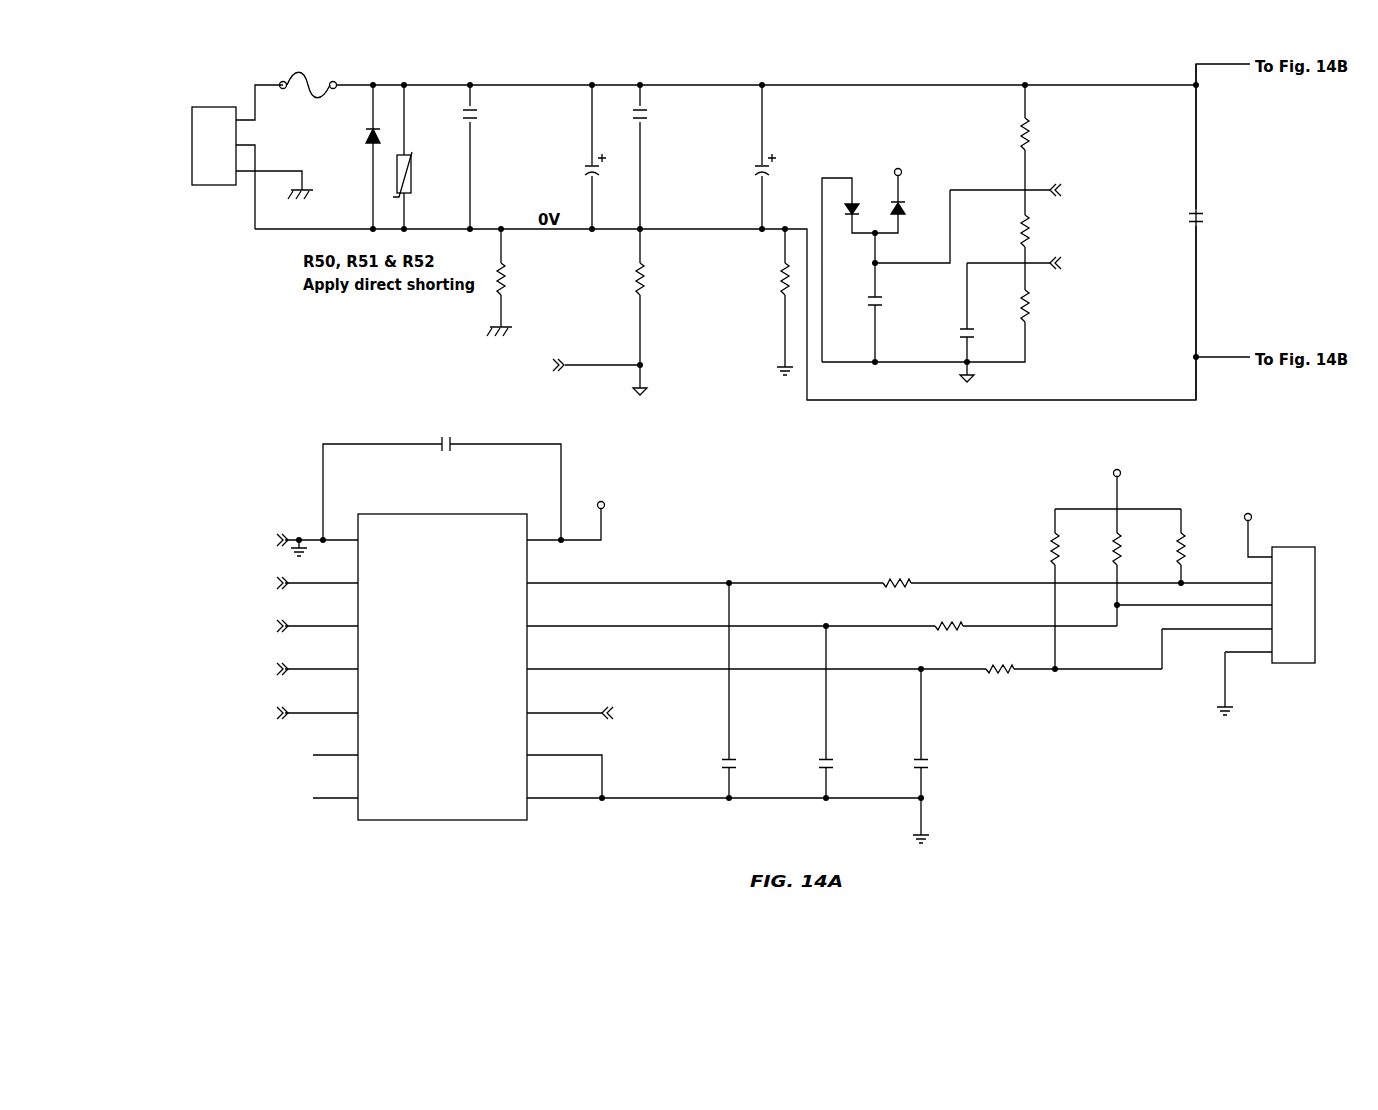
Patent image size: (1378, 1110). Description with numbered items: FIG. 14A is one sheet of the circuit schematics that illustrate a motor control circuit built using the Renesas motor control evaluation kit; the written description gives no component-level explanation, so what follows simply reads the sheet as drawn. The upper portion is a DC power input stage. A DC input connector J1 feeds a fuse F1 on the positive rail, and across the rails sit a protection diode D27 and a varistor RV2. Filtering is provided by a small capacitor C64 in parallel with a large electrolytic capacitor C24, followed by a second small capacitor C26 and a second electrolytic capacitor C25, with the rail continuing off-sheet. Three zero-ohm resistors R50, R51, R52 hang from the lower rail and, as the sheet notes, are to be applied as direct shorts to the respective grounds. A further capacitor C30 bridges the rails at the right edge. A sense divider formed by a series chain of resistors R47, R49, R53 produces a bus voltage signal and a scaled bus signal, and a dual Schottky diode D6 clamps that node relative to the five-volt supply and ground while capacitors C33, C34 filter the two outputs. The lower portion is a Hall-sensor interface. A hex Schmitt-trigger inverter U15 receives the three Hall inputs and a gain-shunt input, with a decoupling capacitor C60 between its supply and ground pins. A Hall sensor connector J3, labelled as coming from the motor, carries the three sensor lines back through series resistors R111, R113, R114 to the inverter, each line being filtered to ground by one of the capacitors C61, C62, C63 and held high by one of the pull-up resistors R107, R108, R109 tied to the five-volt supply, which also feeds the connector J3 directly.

The DC input connector 24V/38V J1 is at (234, 156).
The fuse 10A 5X20mm F1 is at (322, 70).
The diode MRA4003T3 D27 is at (323, 157).
The varistor 56V RV2 is at (423, 157).
The capacitor 0.22uF C64 is at (494, 157).
The electrolytic capacitor 1000uF 50V C24 is at (544, 157).
The capacitor 0.22uF C26 is at (665, 157).
The electrolytic capacitor 1000uF 50V C25 is at (714, 157).
The resistor 0E R50 is at (514, 282).
The resistor 0E R51 is at (561, 312).
The resistor 0E R52 is at (770, 302).
The capacitor 0.22uF C30 is at (1221, 232).
The resistor 90.9K 1% R47 is at (1068, 150).
The resistor 4.99K 1% R49 is at (1051, 236).
The resistor 4.99K 1% R53 is at (968, 325).
The dual Schottky diode BAT54S D6 is at (914, 250).
The capacitor 100pF C33 is at (898, 314).
The capacitor 0.1uF C34 is at (984, 322).
The hex Schmitt inverter MC74HC14ADR2 U15 is at (541, 653).
The capacitor 1000pF C60 is at (440, 481).
The resistor 330E R111 is at (899, 584).
The resistor 330E R113 is at (822, 628).
The resistor 330E R114 is at (844, 671).
The capacitor 0.01uF C61 is at (752, 692).
The capacitor 0.01uF C62 is at (850, 713).
The capacitor 0.01uF C63 is at (945, 756).
The pull-up resistor 10K R107 is at (1116, 589).
The pull-up resistor 10K R108 is at (1183, 540).
The pull-up resistor 10K R109 is at (1205, 546).
The hall sensor connector MC 1.5/5-G-3.81 J3 is at (1263, 579).